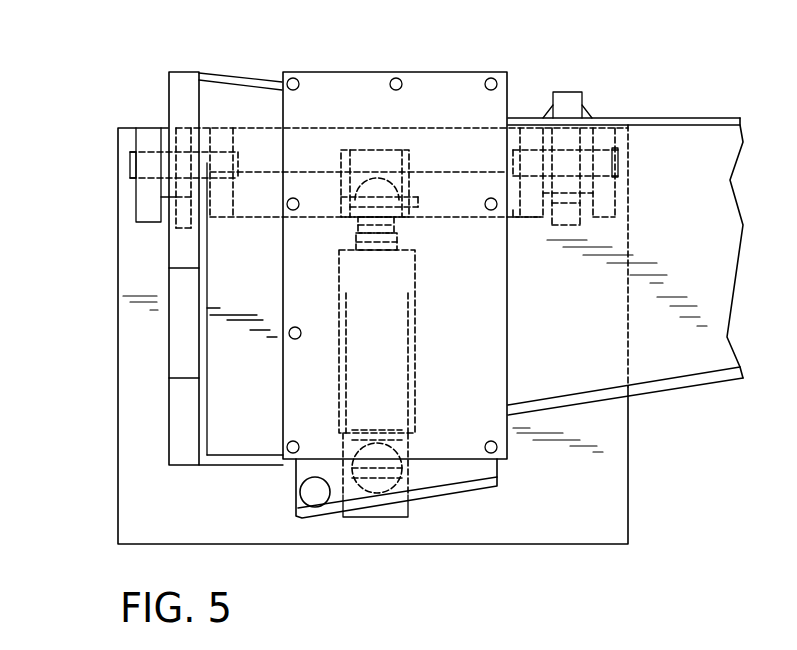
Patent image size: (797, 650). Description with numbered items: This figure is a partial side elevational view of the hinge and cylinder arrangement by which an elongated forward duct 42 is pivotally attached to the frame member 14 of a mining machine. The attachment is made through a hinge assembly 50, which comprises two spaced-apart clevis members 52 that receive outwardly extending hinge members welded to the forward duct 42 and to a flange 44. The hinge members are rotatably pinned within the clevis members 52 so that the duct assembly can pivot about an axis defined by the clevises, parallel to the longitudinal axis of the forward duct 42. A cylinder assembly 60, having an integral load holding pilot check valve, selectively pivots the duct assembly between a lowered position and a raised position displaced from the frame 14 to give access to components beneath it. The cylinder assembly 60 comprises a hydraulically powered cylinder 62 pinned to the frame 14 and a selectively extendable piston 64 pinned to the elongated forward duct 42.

The frame member 14 is at (577, 481).
The elongated forward duct 42 is at (582, 316).
The flange 44 is at (184, 103).
The hinge assembly 50 is at (550, 60).
The clevis members 52 is at (223, 126).
The cylinder assembly 60 is at (435, 505).
The hydraulically powered cylinder 62 is at (413, 402).
The selectively extendable piston 64 is at (397, 242).